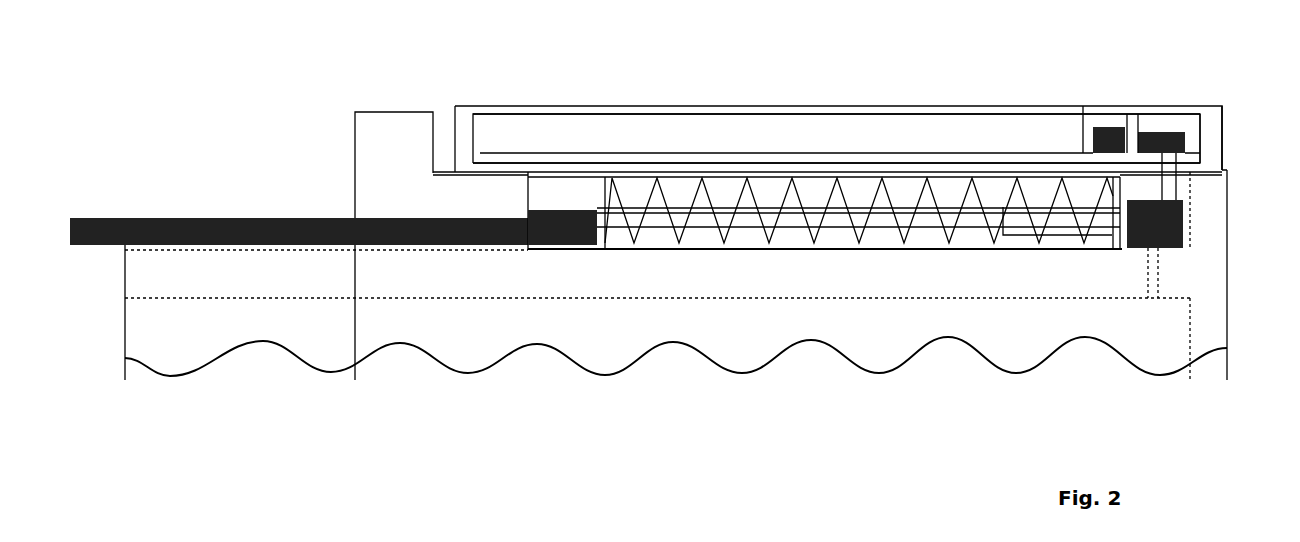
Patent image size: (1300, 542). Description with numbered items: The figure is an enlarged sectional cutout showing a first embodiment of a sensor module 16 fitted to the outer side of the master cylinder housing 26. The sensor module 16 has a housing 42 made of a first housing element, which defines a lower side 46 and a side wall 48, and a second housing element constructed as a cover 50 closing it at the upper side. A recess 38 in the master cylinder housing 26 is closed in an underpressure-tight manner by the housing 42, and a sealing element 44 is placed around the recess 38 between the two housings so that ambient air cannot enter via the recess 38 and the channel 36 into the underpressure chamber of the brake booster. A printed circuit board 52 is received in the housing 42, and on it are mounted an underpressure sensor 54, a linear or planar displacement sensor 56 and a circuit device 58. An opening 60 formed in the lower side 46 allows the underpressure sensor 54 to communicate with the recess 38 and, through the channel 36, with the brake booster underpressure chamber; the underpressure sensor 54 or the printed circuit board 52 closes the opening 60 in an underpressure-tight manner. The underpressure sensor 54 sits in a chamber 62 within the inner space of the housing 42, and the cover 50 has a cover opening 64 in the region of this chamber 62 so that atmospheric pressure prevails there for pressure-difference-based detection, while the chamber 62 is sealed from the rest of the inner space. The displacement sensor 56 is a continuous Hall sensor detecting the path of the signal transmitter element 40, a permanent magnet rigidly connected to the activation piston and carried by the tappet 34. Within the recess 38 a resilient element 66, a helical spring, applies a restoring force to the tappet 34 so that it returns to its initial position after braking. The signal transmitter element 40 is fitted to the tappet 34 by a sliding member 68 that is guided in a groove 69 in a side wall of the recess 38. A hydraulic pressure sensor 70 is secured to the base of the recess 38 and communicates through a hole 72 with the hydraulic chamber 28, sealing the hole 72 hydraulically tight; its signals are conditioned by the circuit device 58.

The sensor module 16 is at (380, 90).
The master cylinder housing 26 is at (353, 150).
The hydraulic chamber 28 is at (1173, 340).
The tappet 34 is at (187, 217).
The channel 36 is at (421, 250).
The recess 38 is at (815, 197).
The signal transmitter element 40 is at (553, 208).
The housing 42 is at (897, 86).
The sealing element 44 is at (453, 118).
The lower side 46 is at (751, 172).
The side wall 48 is at (1212, 150).
The cover 50 is at (638, 112).
The printed circuit board 52 is at (588, 153).
The underpressure sensor 54 is at (1100, 130).
The displacement sensor 56 is at (692, 152).
The circuit device 58 is at (1170, 130).
The opening 60 is at (1105, 152).
The chamber 62 is at (1088, 107).
The cover opening 64 is at (1110, 117).
The resilient element 66 is at (676, 228).
The sliding member 68 is at (582, 250).
The groove 69 is at (740, 228).
The hydraulic pressure sensor 70 is at (1187, 210).
The hole 72 is at (1160, 263).